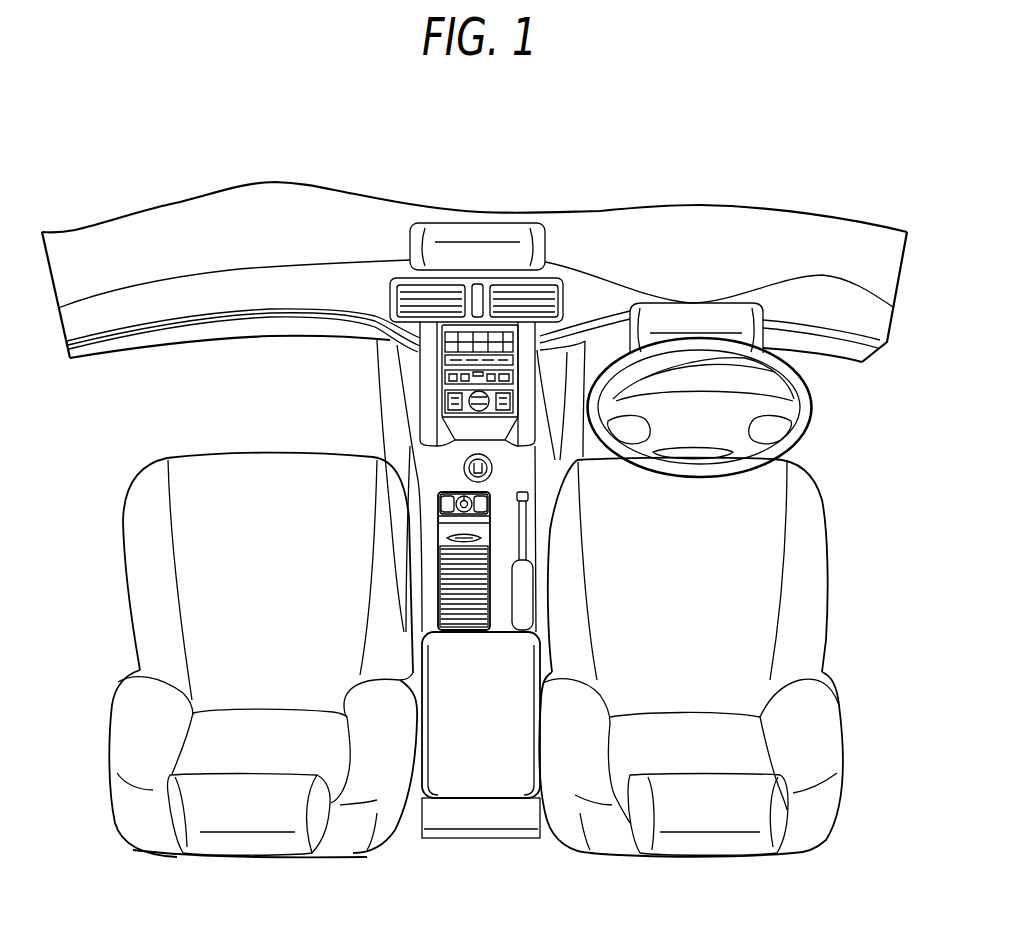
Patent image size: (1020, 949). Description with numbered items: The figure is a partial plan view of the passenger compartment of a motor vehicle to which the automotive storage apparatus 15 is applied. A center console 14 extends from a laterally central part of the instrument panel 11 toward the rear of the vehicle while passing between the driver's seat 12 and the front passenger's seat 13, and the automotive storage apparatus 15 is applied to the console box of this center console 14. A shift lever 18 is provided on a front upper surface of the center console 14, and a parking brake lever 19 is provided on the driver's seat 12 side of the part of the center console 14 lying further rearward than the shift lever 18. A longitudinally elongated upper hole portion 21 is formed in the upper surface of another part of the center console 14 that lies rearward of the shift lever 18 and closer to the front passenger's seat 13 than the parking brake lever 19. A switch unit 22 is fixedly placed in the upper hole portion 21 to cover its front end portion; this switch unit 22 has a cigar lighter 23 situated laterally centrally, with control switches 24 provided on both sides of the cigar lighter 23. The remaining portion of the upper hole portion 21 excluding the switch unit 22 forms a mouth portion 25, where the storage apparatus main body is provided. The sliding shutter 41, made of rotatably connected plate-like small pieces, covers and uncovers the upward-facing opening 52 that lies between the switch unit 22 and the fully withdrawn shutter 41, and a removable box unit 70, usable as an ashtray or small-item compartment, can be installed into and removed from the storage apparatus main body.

The instrument panel 11 is at (719, 226).
The driver's seat 12 is at (815, 585).
The front passenger's seat 13 is at (150, 576).
The center console 14 is at (382, 410).
The automotive storage apparatus 15 is at (430, 543).
The shift lever 18 is at (468, 459).
The parking brake lever 19 is at (525, 549).
The upper hole portion 21 is at (443, 598).
The switch unit 22 is at (472, 507).
The cigar lighter 23 is at (441, 494).
The control switches 24 is at (440, 503).
The mouth portion 25 is at (476, 630).
The shutter 41 is at (490, 602).
The opening 52 is at (440, 568).
The box unit 70 is at (490, 538).